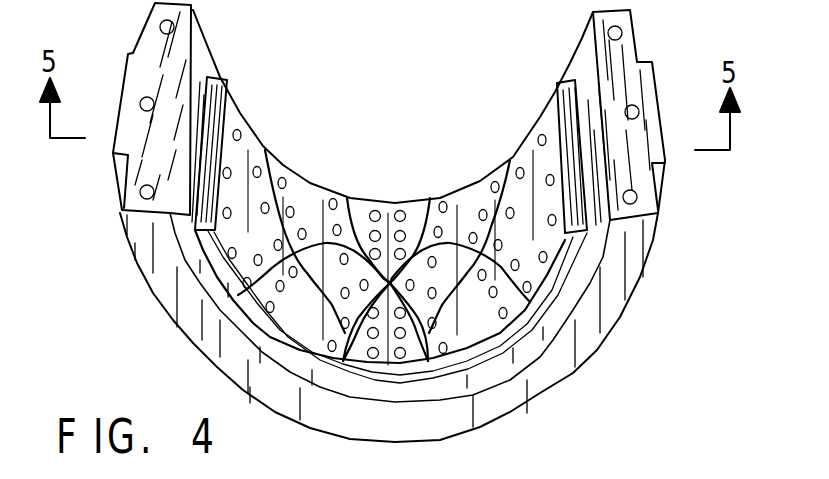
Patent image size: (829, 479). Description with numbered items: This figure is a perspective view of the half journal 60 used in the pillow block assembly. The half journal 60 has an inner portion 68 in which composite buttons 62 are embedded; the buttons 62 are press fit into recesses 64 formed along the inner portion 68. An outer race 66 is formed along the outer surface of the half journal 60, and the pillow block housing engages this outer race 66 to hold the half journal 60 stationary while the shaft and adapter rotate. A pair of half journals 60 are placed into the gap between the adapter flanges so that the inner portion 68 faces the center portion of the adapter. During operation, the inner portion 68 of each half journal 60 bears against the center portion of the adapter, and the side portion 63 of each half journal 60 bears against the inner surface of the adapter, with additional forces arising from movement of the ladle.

The half journal 60 is at (328, 151).
The composite buttons 62 is at (513, 263).
The side portion 63 is at (163, 282).
The recesses 64 is at (560, 322).
The outer race 66 is at (657, 80).
The inner portion 68 is at (470, 190).